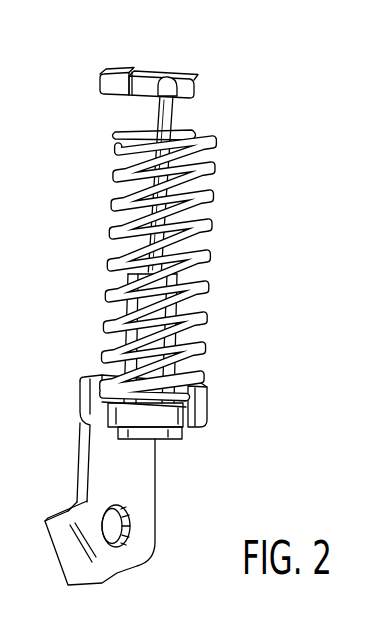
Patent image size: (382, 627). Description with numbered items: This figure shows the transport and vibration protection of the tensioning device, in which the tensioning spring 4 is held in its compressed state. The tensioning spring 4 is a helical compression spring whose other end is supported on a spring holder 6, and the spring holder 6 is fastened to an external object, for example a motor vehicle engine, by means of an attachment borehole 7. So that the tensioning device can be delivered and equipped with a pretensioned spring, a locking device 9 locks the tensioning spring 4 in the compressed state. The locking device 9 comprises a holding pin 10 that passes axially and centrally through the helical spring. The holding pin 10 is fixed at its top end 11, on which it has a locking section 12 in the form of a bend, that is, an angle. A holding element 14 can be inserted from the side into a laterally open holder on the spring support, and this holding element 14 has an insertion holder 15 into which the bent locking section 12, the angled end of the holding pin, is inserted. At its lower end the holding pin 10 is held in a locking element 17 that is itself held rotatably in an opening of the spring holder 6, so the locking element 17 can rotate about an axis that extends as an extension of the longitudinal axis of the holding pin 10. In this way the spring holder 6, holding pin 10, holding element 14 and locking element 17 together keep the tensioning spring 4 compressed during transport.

The tensioning spring 4 is at (214, 226).
The spring holder 6 is at (140, 472).
The attachment borehole 7 is at (129, 537).
The locking device 9 is at (146, 263).
The holding pin 10 is at (177, 118).
The top end 11 is at (195, 78).
The locking section 12 is at (176, 77).
The holding element 14 is at (105, 74).
The insertion holder 15 is at (147, 76).
The locking element 17 is at (192, 346).